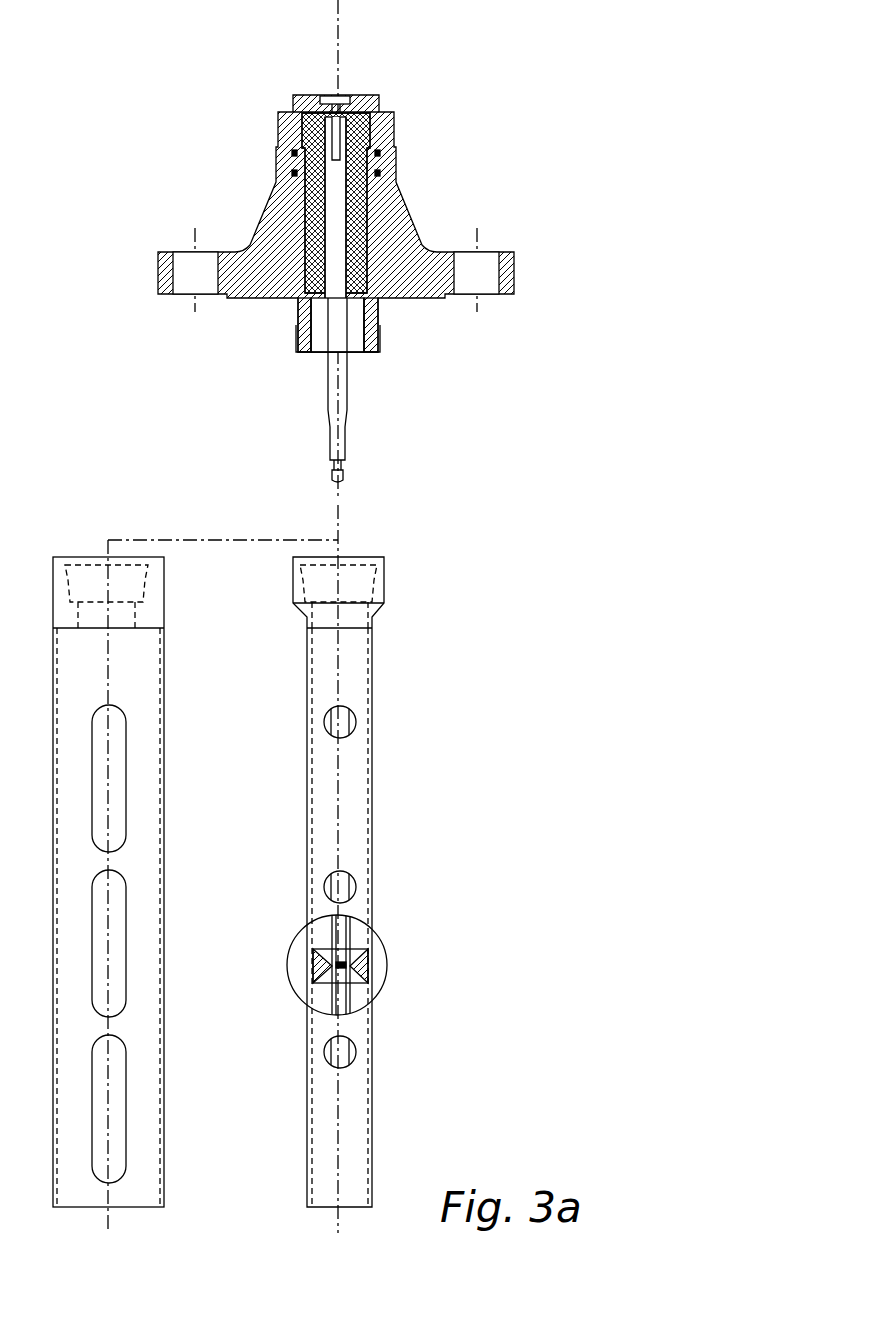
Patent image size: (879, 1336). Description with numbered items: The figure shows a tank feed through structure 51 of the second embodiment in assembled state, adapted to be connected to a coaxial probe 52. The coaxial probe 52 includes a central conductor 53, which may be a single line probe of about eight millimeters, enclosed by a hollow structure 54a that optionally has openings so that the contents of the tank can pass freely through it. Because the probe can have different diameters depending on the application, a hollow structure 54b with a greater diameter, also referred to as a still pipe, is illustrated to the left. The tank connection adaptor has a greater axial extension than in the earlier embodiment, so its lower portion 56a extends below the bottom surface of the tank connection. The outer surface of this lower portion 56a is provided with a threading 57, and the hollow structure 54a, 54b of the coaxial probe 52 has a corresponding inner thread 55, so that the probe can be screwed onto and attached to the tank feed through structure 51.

The tank feed through structure 51 is at (462, 169).
The coaxial probe 52 is at (377, 675).
The central conductor 53 is at (348, 998).
The hollow structure 54a is at (355, 820).
The hollow structure 54b is at (165, 696).
The inner thread 55 is at (377, 586).
The lower portion 56a is at (298, 313).
The threading 57 is at (380, 338).